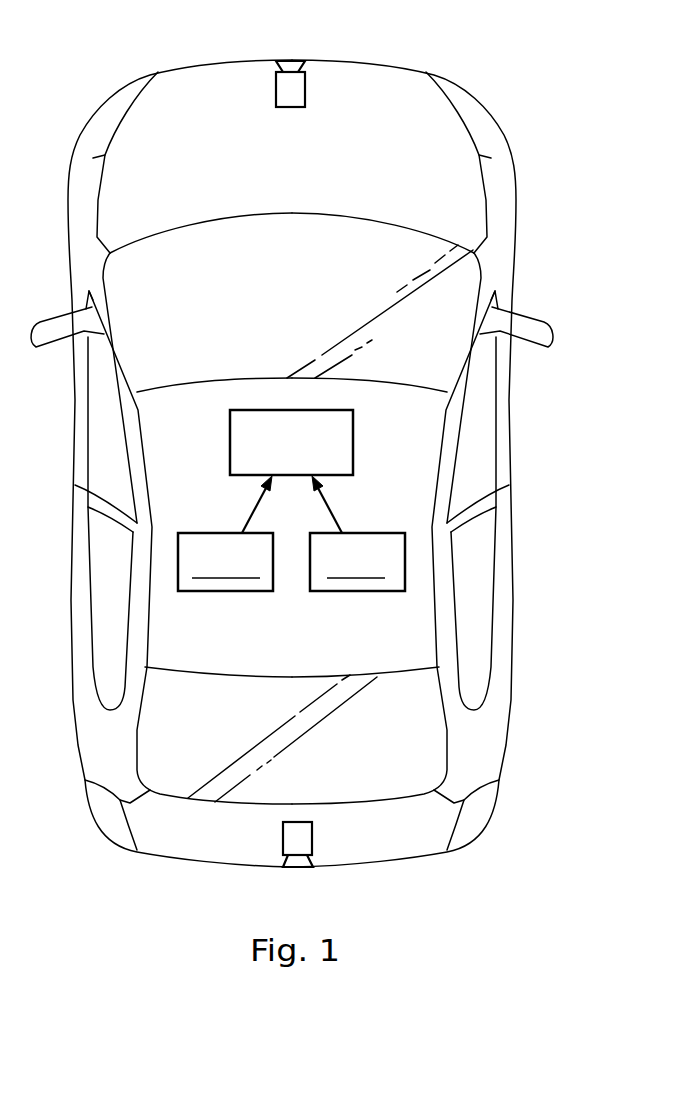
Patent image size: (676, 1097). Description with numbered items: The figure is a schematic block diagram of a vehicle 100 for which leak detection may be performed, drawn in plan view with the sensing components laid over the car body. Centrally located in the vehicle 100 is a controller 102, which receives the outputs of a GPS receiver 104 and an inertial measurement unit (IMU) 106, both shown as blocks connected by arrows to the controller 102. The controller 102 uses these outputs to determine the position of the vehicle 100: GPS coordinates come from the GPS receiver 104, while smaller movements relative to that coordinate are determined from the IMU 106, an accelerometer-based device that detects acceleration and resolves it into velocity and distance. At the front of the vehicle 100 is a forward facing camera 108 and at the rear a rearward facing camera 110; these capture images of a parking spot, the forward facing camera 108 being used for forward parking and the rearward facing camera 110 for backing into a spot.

The vehicle 100 is at (310, 184).
The controller 102 is at (318, 460).
The GPS receiver 104 is at (197, 533).
The inertial measurement unit (IMU) 106 is at (402, 535).
The forward facing camera 108 is at (275, 95).
The rearward facing camera 110 is at (283, 837).